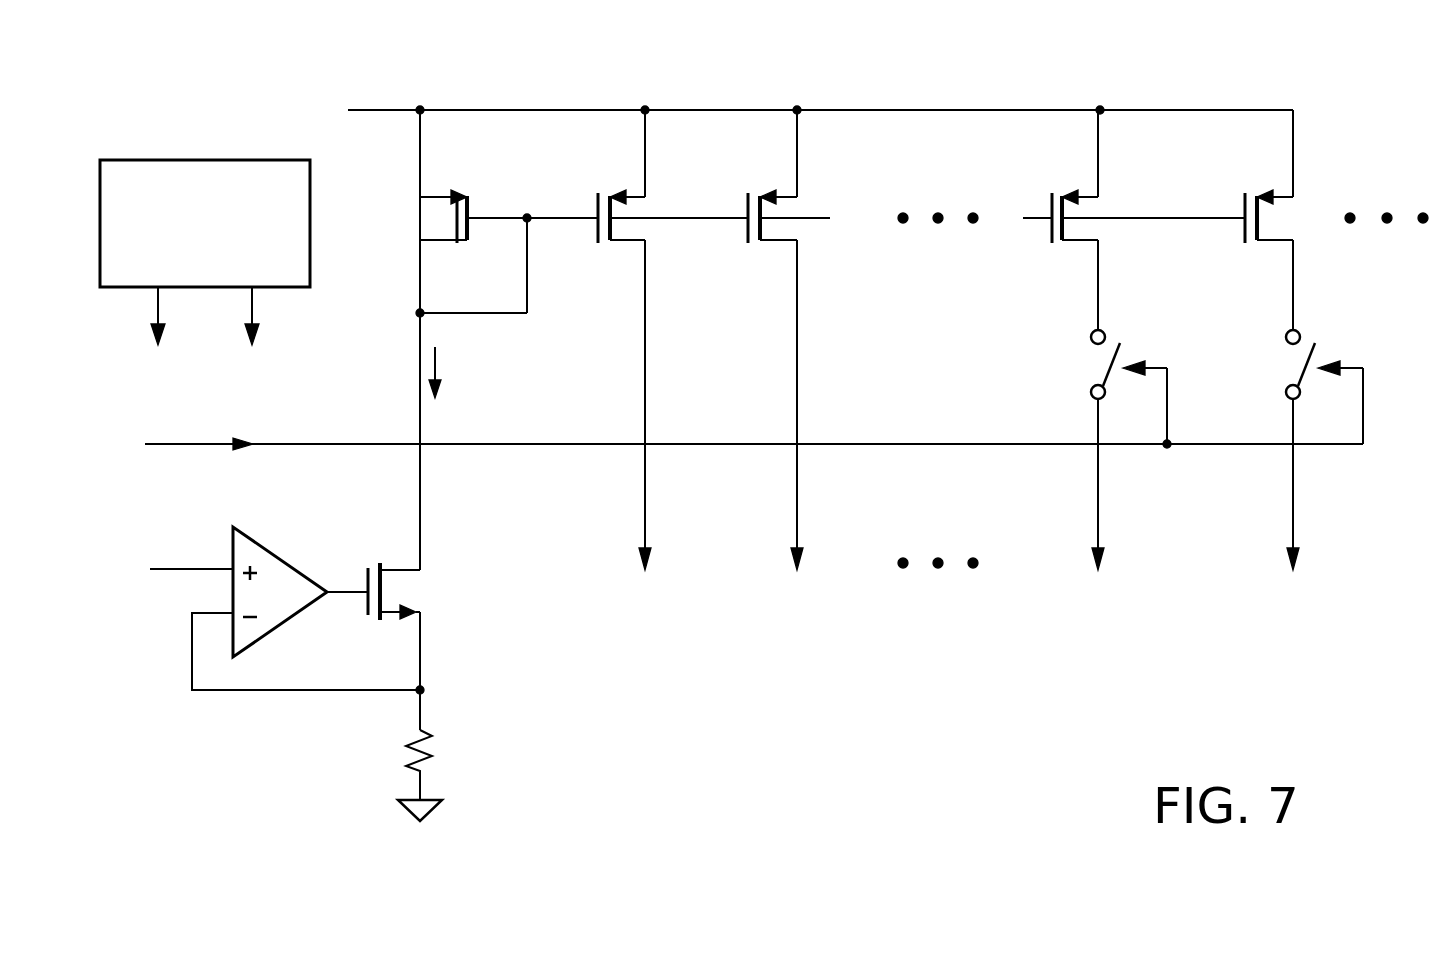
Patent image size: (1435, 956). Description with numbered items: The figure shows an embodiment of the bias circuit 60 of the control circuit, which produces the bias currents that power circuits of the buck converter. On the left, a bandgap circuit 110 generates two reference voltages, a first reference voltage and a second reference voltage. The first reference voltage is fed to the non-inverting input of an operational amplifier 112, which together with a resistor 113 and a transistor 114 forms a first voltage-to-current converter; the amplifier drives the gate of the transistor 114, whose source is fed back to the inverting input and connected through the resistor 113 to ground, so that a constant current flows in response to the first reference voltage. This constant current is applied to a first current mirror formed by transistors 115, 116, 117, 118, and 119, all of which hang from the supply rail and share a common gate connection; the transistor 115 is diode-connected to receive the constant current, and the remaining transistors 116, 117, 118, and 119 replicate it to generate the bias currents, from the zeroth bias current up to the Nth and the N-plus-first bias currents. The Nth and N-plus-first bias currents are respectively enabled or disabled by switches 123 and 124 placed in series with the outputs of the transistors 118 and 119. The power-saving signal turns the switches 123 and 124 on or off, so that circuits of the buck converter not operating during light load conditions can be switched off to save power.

The bias circuit 60 is at (1352, 62).
The bandgap circuit 110 is at (197, 155).
The operational amplifier 112 is at (288, 562).
The resistor 113 is at (433, 752).
The transistor 114 is at (423, 590).
The transistor 115 is at (460, 190).
The transistor 116 is at (650, 207).
The transistor 117 is at (803, 207).
The transistor 118 is at (1106, 207).
The transistor 119 is at (1296, 210).
The switch 123 is at (1090, 366).
The switch 124 is at (1283, 366).